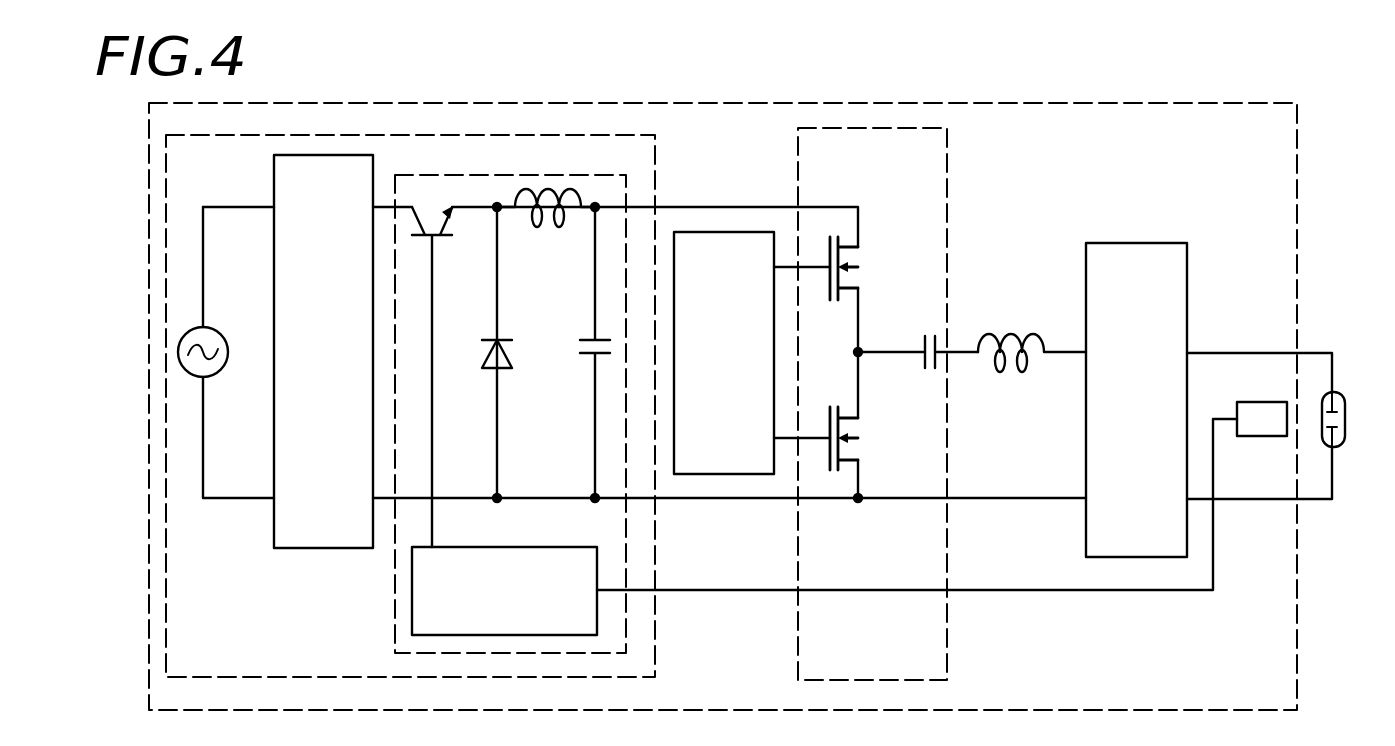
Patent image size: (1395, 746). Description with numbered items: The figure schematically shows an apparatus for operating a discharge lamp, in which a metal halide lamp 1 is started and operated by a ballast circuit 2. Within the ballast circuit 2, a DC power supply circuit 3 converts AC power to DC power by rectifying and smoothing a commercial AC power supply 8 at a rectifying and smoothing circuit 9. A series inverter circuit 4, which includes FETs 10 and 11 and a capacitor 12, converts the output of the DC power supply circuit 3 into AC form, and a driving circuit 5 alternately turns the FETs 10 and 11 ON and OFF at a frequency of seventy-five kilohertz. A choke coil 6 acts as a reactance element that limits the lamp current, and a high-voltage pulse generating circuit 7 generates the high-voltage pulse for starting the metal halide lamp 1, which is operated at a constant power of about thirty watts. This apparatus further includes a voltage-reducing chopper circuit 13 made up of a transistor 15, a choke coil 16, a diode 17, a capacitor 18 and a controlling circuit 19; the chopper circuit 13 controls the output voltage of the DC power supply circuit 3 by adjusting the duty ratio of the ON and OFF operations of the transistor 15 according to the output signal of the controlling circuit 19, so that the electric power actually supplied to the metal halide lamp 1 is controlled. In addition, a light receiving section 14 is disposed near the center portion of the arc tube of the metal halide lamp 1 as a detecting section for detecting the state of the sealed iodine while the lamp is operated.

The metal halide lamp 1 is at (1345, 406).
The ballast circuit 2 is at (1300, 201).
The DC power supply circuit 3 is at (656, 196).
The series inverter circuit 4 is at (950, 196).
The driving circuit 5 is at (750, 232).
The choke coil 6 is at (1012, 334).
The high-voltage pulse generating circuit 7 is at (1138, 243).
The commercial AC power supply 8 is at (218, 328).
The rectifying and smoothing circuit 9 is at (274, 452).
The FET 10 is at (858, 253).
The FET 11 is at (927, 370).
The capacitor 12 is at (928, 333).
The voltage-reducing chopper circuit 13 is at (396, 567).
The light receiving section 14 is at (1261, 402).
The transistor 15 is at (440, 240).
The choke coil 16 is at (545, 228).
The diode 17 is at (497, 369).
The capacitor 18 is at (580, 350).
The controlling circuit 19 is at (412, 613).